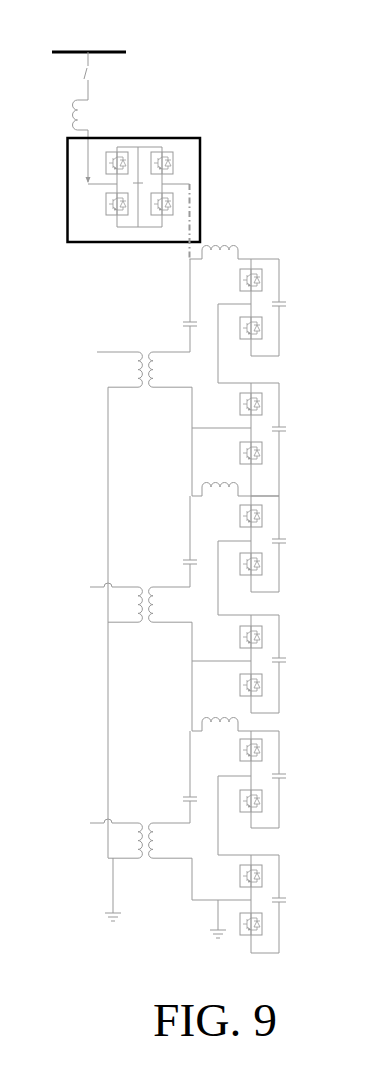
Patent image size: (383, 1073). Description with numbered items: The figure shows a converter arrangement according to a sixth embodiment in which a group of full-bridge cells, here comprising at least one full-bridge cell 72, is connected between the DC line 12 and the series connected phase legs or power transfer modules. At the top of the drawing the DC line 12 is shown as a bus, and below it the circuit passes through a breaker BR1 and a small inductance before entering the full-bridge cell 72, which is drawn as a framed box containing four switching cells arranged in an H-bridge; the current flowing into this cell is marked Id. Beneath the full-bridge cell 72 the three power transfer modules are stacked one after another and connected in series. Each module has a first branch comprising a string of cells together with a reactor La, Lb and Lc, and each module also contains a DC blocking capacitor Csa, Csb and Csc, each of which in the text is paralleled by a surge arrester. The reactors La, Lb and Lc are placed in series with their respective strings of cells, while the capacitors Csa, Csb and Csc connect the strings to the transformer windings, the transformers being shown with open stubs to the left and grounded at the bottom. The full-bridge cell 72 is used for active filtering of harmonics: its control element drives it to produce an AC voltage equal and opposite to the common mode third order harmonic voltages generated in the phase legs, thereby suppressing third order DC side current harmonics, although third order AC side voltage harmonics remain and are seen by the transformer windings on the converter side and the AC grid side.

The DC line 12 is at (102, 55).
The full-bridge cell 72 is at (199, 182).
The circuit breaker BR1 is at (52, 117).
The DC current Id is at (96, 174).
The reactor La is at (235, 235).
The reactor Lb is at (235, 473).
The reactor Lc is at (235, 708).
The DC blocking capacitor Csa is at (167, 305).
The DC blocking capacitor Csb is at (167, 541).
The DC blocking capacitor Csc is at (168, 777).